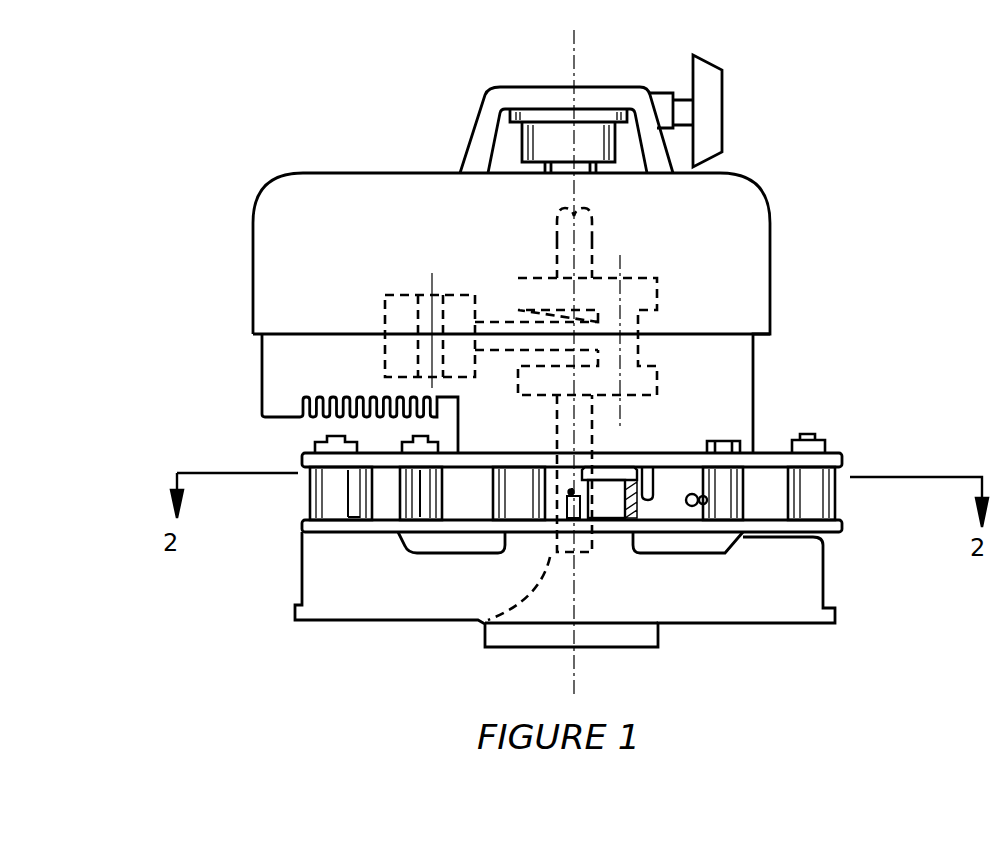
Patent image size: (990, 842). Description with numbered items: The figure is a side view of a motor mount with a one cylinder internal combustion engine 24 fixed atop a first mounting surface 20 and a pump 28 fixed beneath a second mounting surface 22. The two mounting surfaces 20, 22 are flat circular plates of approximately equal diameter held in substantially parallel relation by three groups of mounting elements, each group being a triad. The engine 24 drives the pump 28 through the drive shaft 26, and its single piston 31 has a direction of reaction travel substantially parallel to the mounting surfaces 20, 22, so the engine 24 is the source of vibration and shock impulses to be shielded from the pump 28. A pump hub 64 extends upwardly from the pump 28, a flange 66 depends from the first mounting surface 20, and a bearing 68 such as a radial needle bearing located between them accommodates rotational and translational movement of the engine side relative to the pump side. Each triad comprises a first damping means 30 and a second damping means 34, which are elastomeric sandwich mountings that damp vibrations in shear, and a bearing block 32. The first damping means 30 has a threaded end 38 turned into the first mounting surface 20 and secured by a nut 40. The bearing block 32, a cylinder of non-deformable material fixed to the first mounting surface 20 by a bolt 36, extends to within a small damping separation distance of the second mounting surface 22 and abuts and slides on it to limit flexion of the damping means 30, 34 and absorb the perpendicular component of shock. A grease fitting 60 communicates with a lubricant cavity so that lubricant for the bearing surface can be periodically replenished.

The first mounting surface 20 is at (840, 460).
The second mounting surface 22 is at (827, 527).
The internal combustion engine 24 is at (758, 290).
The drive shaft 26 is at (480, 627).
The pump 28 is at (805, 567).
The first damping means 30 is at (817, 478).
The piston 31 is at (403, 292).
The bearing block 32 is at (730, 497).
The second damping means 34 is at (775, 495).
The bolt 36 is at (723, 446).
The threaded end 38 is at (813, 432).
The nut 40 is at (827, 446).
The grease fitting 60 is at (689, 497).
The pump hub 64 is at (603, 478).
The flange 66 is at (652, 480).
The bearing 68 is at (627, 490).